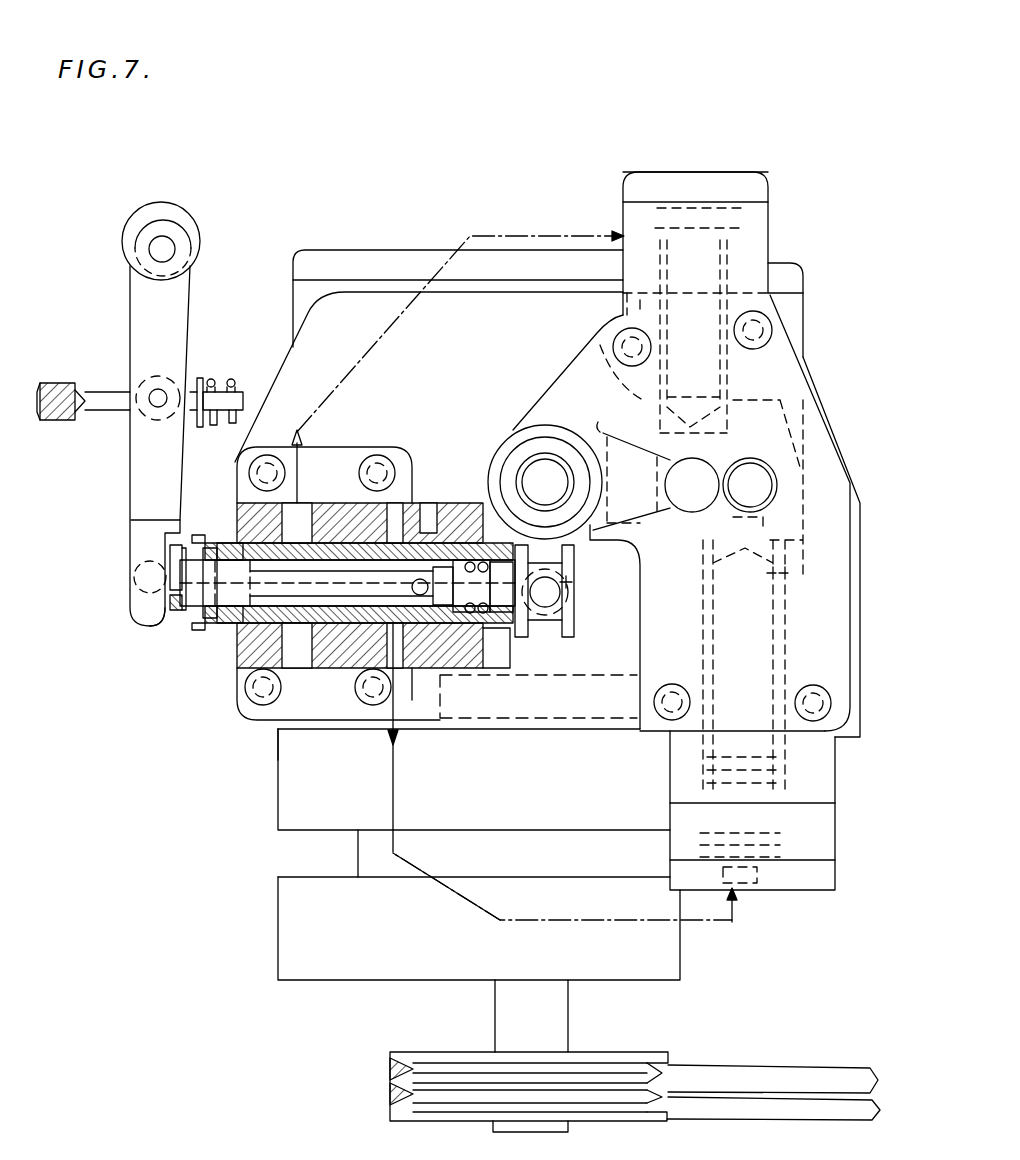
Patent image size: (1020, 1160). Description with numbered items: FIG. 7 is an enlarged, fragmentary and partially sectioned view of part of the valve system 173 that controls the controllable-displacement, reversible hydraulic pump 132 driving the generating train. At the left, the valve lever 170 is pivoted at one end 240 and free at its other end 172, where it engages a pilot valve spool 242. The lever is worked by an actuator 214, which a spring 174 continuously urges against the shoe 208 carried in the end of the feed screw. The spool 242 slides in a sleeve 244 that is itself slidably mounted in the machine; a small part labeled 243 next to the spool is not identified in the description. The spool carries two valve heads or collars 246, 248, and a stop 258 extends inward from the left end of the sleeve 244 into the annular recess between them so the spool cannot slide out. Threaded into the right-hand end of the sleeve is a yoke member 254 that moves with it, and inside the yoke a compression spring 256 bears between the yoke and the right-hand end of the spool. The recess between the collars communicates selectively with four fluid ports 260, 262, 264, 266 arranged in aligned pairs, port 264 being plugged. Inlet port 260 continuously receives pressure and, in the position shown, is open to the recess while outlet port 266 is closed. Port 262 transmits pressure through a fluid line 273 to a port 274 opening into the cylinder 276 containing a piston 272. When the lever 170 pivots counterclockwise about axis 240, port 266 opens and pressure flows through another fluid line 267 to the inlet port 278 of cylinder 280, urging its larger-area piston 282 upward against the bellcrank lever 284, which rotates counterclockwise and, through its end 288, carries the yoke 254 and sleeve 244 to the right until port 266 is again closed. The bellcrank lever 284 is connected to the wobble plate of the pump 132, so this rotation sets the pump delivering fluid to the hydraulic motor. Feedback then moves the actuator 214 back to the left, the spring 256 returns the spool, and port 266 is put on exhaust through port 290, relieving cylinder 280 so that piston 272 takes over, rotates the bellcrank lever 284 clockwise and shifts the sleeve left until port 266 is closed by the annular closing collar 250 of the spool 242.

The hydraulic pump 132 is at (268, 824).
The valve lever 170 is at (130, 505).
The free end of lever 172 is at (165, 622).
The valve system 173 is at (208, 731).
The spring 174 is at (233, 380).
The shoe 208 is at (80, 383).
The actuator 214 is at (110, 415).
The pivoted end of lever 240 is at (166, 250).
The pilot valve spool 242 is at (170, 558).
The flange 243 is at (177, 592).
The sleeve 244 is at (225, 628).
The valve collar 246 is at (222, 627).
The valve collar 248 is at (442, 548).
The annular closing collar 250 is at (470, 560).
The yoke member 254 is at (538, 637).
The compression spring 256 is at (470, 677).
The stop 258 is at (230, 555).
The inlet port 260 is at (290, 640).
The fluid port 262 is at (298, 543).
The fluid port 264 is at (410, 503).
The outlet port 266 is at (405, 722).
The fluid line 267 is at (488, 913).
The piston 272 is at (772, 226).
The fluid line 273 is at (383, 337).
The port 274 is at (620, 227).
The cylinder 276 is at (680, 232).
The inlet port 278 is at (745, 920).
The cylinder 280 is at (665, 827).
The piston 282 is at (705, 776).
The bellcrank lever 284 is at (583, 637).
The end of bellcrank lever 288 is at (576, 586).
The exhaust port 290 is at (347, 583).